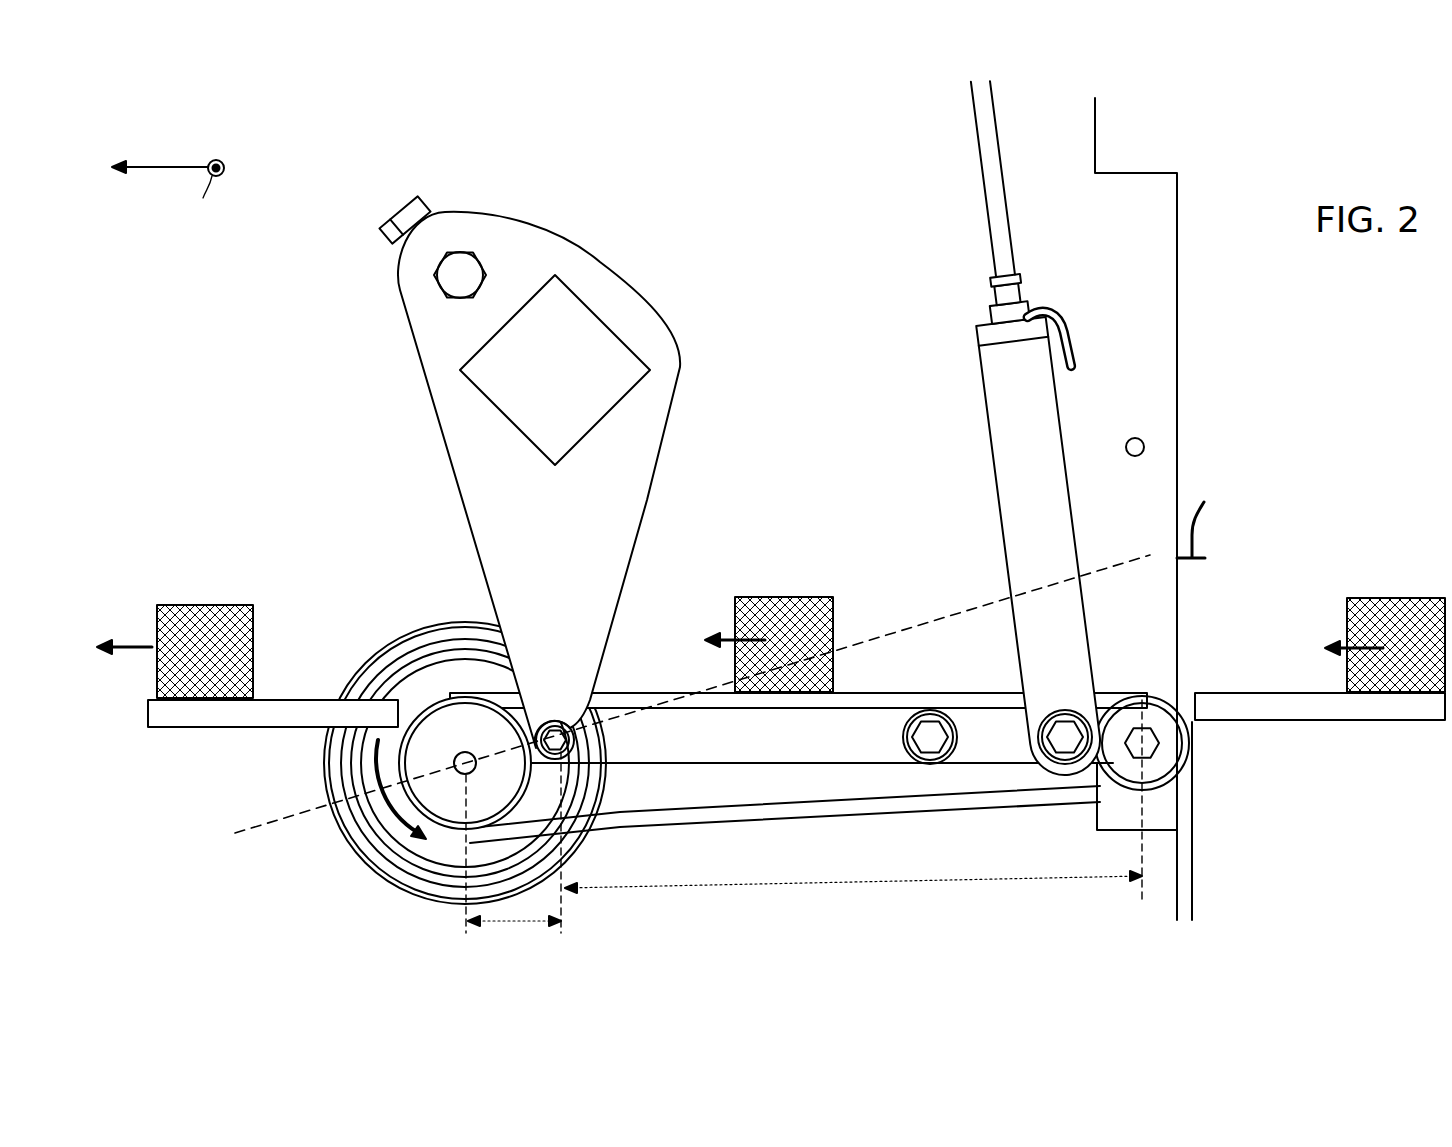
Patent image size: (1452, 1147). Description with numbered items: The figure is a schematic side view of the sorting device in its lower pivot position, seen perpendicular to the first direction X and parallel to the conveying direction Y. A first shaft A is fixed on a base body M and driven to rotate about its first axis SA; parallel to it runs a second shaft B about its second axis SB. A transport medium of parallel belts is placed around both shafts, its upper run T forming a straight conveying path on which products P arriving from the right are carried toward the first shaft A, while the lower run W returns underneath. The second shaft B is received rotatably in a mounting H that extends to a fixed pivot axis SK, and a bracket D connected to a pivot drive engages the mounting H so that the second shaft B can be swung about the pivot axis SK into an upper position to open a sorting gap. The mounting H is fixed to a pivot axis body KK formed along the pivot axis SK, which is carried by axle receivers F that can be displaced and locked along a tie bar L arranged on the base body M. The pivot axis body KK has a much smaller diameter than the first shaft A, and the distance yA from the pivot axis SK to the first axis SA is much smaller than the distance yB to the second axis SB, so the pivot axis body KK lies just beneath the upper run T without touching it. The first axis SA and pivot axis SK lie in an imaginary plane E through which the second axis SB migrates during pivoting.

The second direction Y is at (157, 144).
The first direction X is at (213, 208).
The first shaft A is at (363, 743).
The upper run T is at (900, 693).
The mounting H is at (787, 738).
The lower run W is at (902, 802).
The first axis SA is at (463, 775).
The second shaft B is at (1177, 710).
The second axis SB is at (1145, 748).
The axle receiver F is at (562, 545).
The tie bar L is at (570, 394).
The pivot axis body KK is at (568, 722).
The pivot axis SK is at (560, 750).
The bracket D is at (1018, 428).
The base body M is at (1134, 257).
The products P is at (215, 604).
The imaginary plane E is at (671, 707).
The distance from pivot axis to first axis yA is at (513, 863).
The distance from pivot axis to second axis yB is at (853, 815).